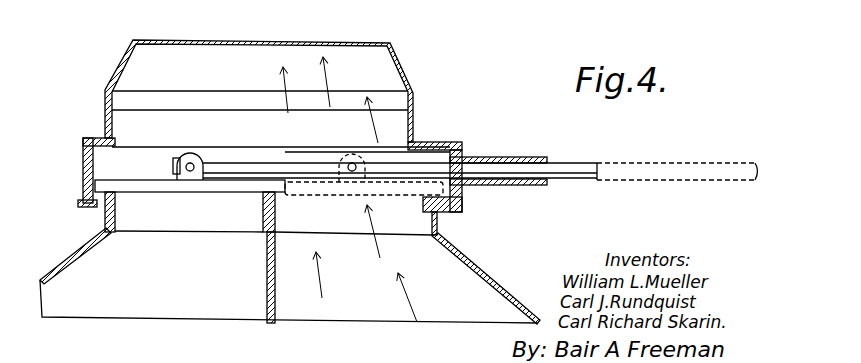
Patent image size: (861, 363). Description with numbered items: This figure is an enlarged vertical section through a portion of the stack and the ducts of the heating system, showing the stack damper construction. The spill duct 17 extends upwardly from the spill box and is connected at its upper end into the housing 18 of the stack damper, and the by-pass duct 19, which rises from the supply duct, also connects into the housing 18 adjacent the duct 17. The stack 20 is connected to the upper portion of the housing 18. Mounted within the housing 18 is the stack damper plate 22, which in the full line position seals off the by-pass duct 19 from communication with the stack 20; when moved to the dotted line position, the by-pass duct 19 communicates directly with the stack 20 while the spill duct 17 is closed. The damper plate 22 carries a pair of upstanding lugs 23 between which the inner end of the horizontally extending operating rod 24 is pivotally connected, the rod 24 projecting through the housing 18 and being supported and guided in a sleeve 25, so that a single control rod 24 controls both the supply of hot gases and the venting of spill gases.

The duct 17 is at (473, 278).
The housing 18 is at (432, 143).
The by-pass duct 19 is at (88, 268).
The stack 20 is at (396, 53).
The stack damper plate 22 is at (170, 185).
The upstanding lugs 23 is at (190, 153).
The operating rod 24 is at (242, 165).
The sleeve 25 is at (507, 157).